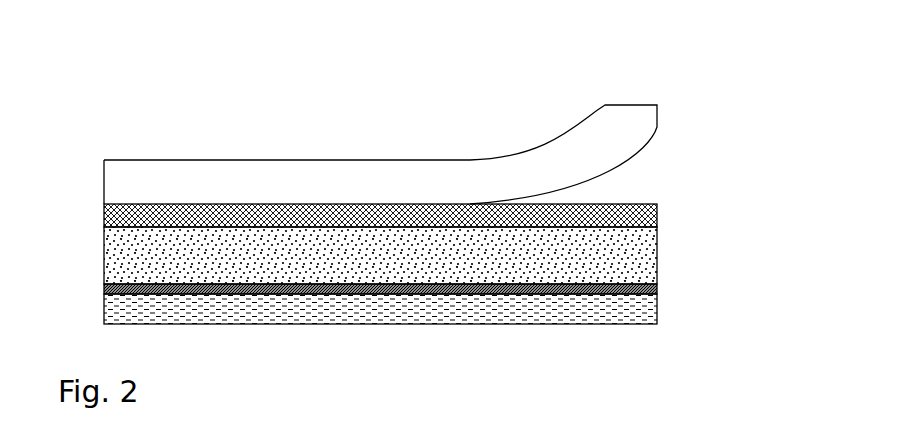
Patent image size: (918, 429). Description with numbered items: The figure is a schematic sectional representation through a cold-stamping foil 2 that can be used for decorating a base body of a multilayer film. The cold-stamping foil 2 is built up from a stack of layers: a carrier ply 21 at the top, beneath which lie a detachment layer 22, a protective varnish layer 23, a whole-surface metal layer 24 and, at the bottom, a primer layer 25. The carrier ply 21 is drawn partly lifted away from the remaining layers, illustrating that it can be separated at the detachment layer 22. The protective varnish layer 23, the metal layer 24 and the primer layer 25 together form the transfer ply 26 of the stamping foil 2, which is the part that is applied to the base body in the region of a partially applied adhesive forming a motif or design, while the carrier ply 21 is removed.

The cold-stamping foil 2 is at (357, 104).
The carrier ply 21 is at (630, 133).
The detachment layer 22 is at (632, 215).
The protective varnish layer 23 is at (630, 253).
The whole-surface metal layer 24 is at (657, 288).
The primer layer 25 is at (632, 310).
The transfer ply 26 is at (378, 274).